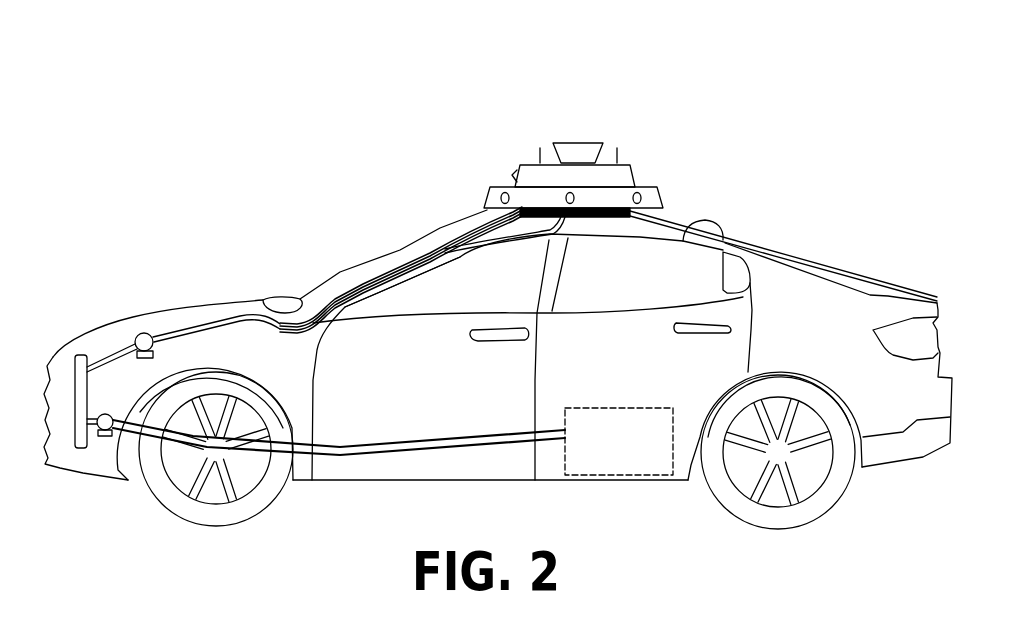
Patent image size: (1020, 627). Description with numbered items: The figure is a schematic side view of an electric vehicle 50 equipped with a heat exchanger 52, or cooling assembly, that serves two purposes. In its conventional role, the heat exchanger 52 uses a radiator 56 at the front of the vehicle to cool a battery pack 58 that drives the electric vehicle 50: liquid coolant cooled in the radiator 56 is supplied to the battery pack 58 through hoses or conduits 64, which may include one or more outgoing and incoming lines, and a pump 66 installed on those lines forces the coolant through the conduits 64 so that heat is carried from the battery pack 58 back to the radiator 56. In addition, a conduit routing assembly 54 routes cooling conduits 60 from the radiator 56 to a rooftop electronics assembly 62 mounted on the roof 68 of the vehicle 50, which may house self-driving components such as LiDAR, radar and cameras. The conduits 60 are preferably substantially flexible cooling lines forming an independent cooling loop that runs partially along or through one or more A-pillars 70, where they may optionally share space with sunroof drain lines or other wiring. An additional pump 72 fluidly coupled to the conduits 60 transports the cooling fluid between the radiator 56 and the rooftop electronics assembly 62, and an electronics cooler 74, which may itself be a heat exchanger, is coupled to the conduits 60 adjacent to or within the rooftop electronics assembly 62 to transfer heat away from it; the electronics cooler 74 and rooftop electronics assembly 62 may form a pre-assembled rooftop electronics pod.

The electric vehicle 50 is at (269, 146).
The heat exchanger 52 is at (150, 290).
The conduit routing assembly 54 is at (360, 276).
The radiator 56 is at (86, 352).
The battery pack 58 is at (620, 478).
The cooling conduits 60 is at (342, 295).
The rooftop electronics assembly 62 is at (530, 165).
The conduits 64 is at (350, 457).
The pump 66 is at (103, 436).
The roof 68 is at (457, 223).
The A-pillars 70 is at (405, 260).
The additional pump 72 is at (155, 350).
The electronics cooler 74 is at (597, 222).